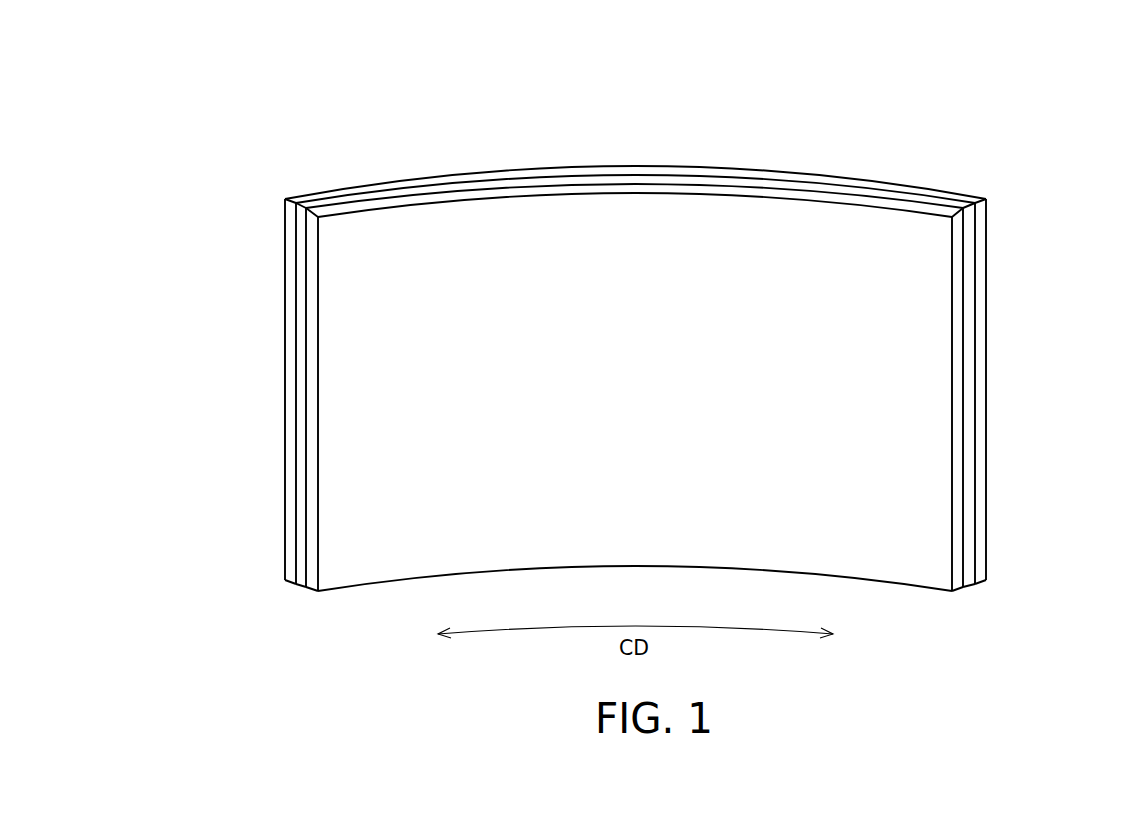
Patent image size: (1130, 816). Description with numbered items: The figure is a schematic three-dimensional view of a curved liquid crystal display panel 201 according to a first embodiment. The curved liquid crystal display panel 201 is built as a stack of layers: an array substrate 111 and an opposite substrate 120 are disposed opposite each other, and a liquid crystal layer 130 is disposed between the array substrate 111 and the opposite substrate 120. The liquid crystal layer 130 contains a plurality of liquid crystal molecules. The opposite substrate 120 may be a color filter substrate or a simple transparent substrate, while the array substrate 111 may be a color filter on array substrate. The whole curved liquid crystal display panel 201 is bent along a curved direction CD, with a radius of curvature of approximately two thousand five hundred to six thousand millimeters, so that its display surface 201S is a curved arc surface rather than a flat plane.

The curved liquid crystal display panel 201 is at (663, 352).
The display surface 201S is at (352, 572).
The array substrate 111 is at (290, 383).
The liquid crystal layer 130 is at (303, 453).
The opposite substrate 120 is at (311, 521).